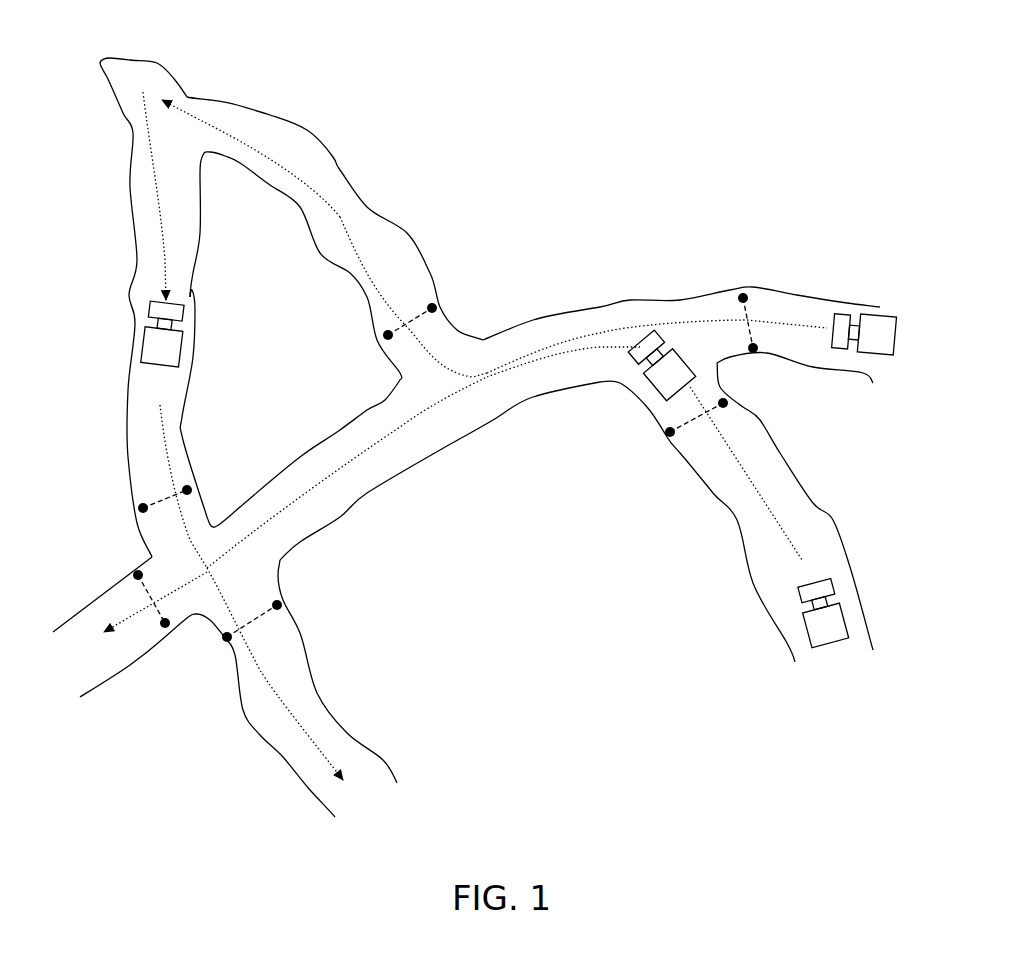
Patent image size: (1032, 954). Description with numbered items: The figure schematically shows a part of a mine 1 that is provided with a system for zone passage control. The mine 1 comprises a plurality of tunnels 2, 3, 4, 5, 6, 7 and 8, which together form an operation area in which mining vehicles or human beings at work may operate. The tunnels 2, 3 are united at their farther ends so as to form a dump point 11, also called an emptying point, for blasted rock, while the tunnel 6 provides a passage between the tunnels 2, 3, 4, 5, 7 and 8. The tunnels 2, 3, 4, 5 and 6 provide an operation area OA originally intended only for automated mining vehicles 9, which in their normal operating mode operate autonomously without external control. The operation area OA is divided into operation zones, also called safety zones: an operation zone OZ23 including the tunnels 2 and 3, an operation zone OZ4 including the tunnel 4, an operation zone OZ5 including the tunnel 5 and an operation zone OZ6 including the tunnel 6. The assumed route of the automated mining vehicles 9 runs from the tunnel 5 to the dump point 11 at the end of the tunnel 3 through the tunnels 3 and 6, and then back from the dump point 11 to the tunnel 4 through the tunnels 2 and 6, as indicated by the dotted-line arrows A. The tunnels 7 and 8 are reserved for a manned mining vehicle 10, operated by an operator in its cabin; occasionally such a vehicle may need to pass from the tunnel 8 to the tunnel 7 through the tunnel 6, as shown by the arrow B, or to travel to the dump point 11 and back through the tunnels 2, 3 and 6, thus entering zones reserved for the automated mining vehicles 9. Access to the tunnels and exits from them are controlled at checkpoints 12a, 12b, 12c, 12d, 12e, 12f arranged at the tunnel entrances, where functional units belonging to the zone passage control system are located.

The mine 1 is at (767, 83).
The tunnel 2 is at (140, 287).
The tunnel 3 is at (400, 253).
The tunnel 4 is at (307, 758).
The tunnel 5 is at (757, 527).
The tunnel 6 is at (380, 460).
The tunnel 7 is at (98, 612).
The tunnel 8 is at (793, 313).
The automated mining vehicle 9 is at (152, 348).
The manned mining vehicle 10 is at (873, 337).
The dump point 11 is at (123, 70).
The checkpoint 12a is at (152, 612).
The checkpoint 12b is at (750, 320).
The checkpoint 12c is at (168, 498).
The checkpoint 12d is at (418, 310).
The checkpoint 12e is at (267, 613).
The checkpoint 12f is at (687, 427).
The arrows A is at (165, 212).
The arrow B is at (340, 463).
The operation zone OZ23 is at (340, 135).
The operation zone OZ4 is at (273, 787).
The operation zone OZ5 is at (710, 590).
The operation zone OZ6 is at (478, 460).
The operation area OA is at (600, 193).